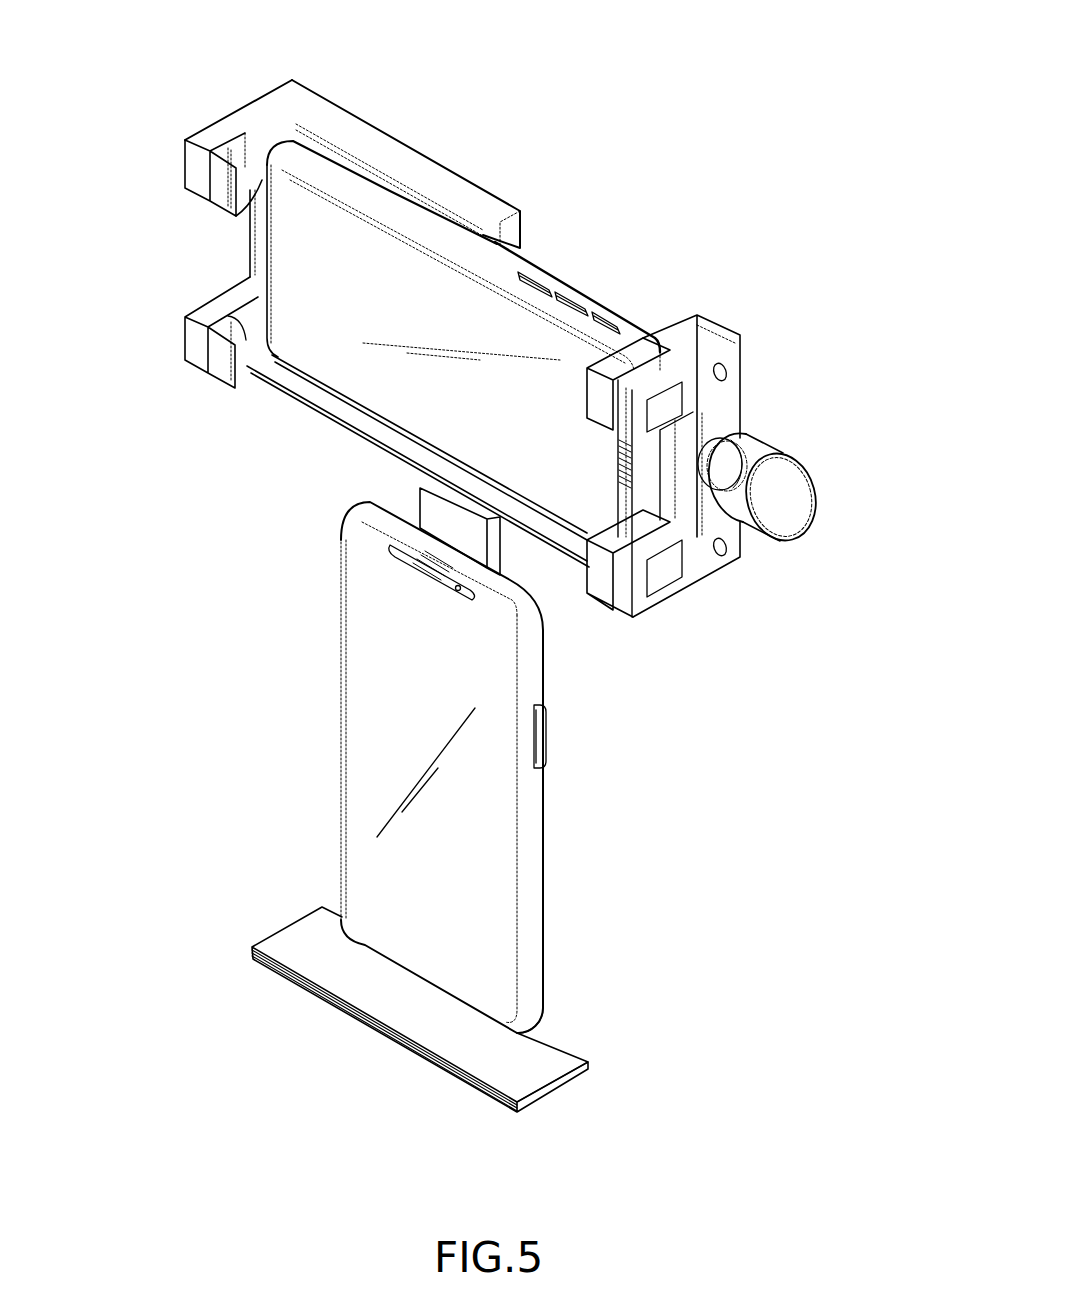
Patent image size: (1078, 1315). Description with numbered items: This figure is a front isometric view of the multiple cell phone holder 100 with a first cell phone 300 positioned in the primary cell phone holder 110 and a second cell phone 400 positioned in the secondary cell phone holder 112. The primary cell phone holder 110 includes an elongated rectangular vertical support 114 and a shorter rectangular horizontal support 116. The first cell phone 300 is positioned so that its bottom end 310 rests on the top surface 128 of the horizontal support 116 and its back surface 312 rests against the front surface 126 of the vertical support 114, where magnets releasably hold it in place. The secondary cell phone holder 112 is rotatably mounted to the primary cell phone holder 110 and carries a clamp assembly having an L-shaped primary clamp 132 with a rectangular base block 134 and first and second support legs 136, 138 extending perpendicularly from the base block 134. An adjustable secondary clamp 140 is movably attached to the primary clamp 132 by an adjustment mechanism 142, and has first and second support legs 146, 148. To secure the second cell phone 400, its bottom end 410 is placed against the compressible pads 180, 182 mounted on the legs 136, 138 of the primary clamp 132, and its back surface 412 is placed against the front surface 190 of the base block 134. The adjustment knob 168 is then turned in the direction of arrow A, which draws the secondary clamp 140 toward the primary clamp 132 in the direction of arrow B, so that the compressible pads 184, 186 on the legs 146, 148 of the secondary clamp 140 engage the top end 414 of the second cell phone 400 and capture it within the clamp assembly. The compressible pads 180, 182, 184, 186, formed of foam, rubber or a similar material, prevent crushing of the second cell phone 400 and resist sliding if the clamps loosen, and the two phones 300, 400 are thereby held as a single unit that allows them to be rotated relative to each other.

The multiple cell phone holder 100 is at (113, 33).
The primary cell phone holder 110 is at (186, 875).
The secondary cell phone holder 112 is at (697, 170).
The vertical support 114 is at (497, 553).
The horizontal support 116 is at (445, 1040).
The front surface 126 is at (427, 512).
The top surface 128 is at (530, 1075).
The primary clamp 132 is at (274, 56).
The base block 134 is at (373, 138).
The first support leg 136 is at (180, 175).
The second support leg 138 is at (190, 345).
The adjustable secondary clamp 140 is at (762, 330).
The adjustment mechanism 142 is at (824, 420).
The first support leg 146 is at (630, 433).
The second support leg 148 is at (693, 570).
The adjustment knob 168 is at (790, 503).
The compressible pad 180 is at (225, 150).
The compressible pad 182 is at (222, 375).
The compressible pad 184 is at (597, 400).
The compressible pad 186 is at (597, 587).
The front surface 190 is at (397, 210).
The first cell phone 300 is at (350, 755).
The bottom end 310 is at (530, 1025).
The back surface 312 is at (548, 852).
The second cell phone 400 is at (487, 303).
The bottom end 410 is at (290, 145).
The back surface 412 is at (462, 225).
The top end 414 is at (650, 463).